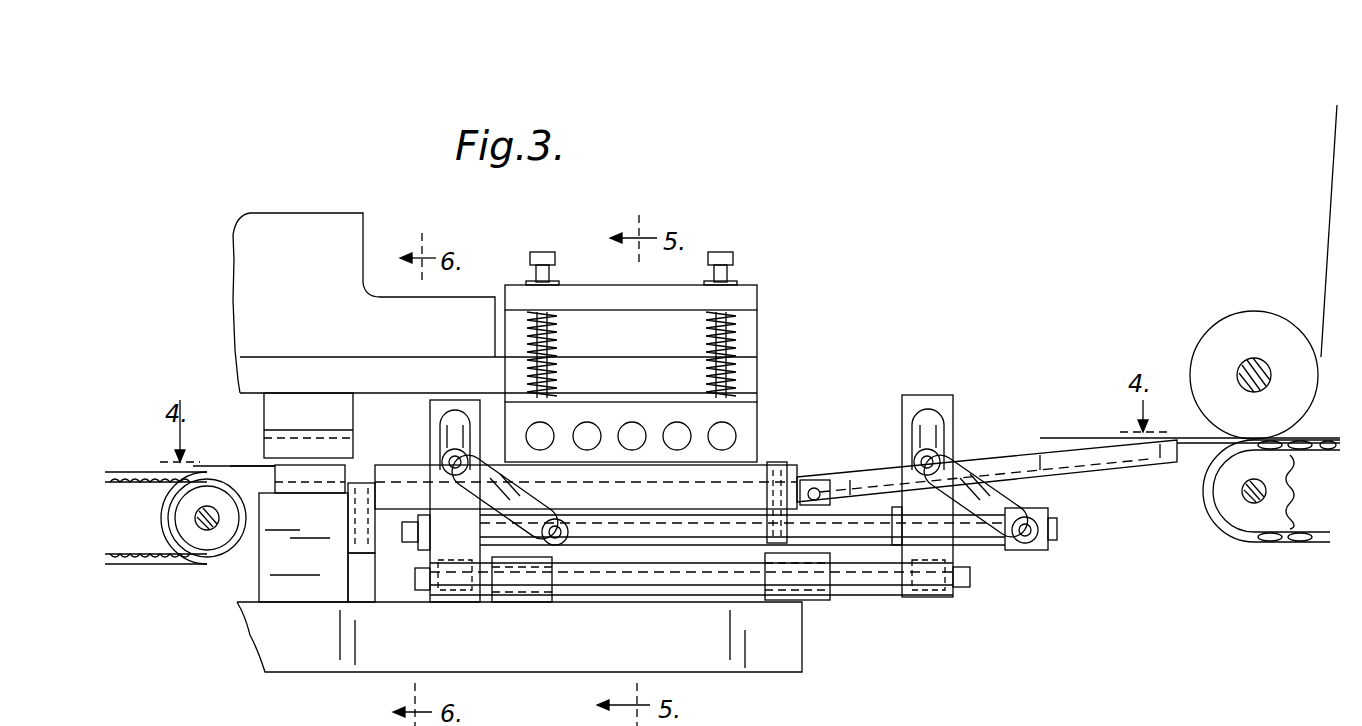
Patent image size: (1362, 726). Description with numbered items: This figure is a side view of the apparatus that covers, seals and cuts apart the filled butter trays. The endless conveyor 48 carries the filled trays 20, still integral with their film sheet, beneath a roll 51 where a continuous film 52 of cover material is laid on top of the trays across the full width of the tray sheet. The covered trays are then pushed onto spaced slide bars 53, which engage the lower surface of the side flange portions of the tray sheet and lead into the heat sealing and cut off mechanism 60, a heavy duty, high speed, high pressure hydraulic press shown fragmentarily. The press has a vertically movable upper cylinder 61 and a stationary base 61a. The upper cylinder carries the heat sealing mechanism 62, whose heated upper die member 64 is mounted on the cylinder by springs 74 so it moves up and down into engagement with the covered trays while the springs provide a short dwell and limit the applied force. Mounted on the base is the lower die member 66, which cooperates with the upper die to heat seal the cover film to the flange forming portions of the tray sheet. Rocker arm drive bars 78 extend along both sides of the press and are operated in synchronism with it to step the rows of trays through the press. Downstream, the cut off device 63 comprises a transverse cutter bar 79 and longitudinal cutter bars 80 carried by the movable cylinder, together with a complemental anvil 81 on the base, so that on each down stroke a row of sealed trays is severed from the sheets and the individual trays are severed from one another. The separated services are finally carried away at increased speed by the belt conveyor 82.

The shallow tray 20 is at (1197, 450).
The endless conveyor 48 is at (1280, 545).
The roll 51 is at (1228, 322).
The continuous film of cover material 52 is at (1326, 268).
The slide bars 53 is at (1098, 466).
The heat sealing and cut off mechanism 60 is at (808, 312).
The upper cylinder 61 is at (250, 297).
The stationary base 61a is at (312, 672).
The heat sealing mechanism 62 is at (768, 398).
The cut off device 63 is at (250, 458).
The upper die member 64 is at (757, 424).
The lower die member 66 is at (735, 490).
The springs 74 is at (700, 327).
The rocker arm drive bars 78 is at (985, 556).
The transverse cutter bar 79 is at (345, 468).
The longitudinal cutter bars 80 is at (308, 425).
The anvil 81 is at (300, 478).
The conveyor 82 is at (126, 472).